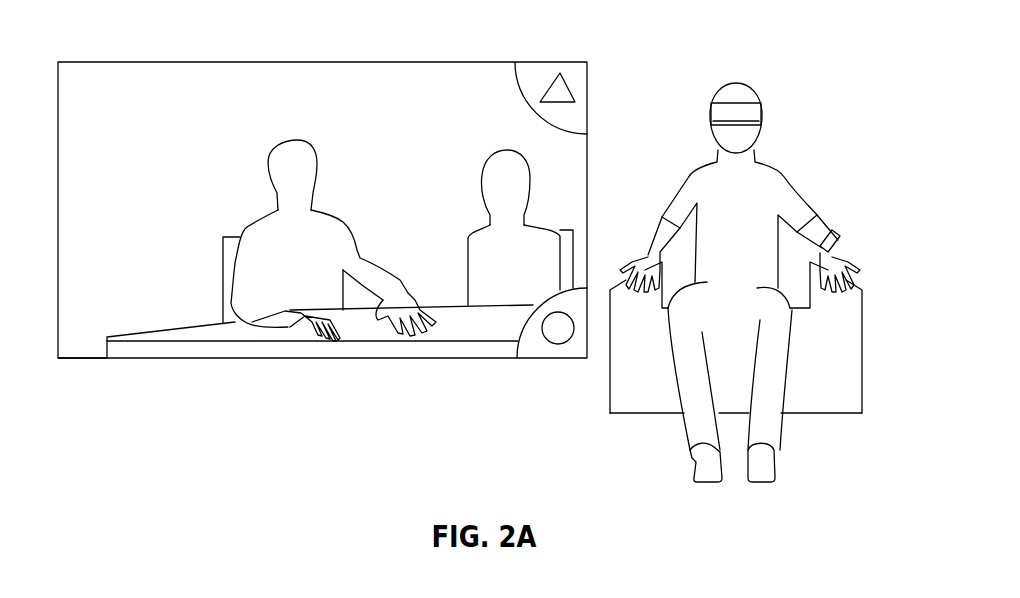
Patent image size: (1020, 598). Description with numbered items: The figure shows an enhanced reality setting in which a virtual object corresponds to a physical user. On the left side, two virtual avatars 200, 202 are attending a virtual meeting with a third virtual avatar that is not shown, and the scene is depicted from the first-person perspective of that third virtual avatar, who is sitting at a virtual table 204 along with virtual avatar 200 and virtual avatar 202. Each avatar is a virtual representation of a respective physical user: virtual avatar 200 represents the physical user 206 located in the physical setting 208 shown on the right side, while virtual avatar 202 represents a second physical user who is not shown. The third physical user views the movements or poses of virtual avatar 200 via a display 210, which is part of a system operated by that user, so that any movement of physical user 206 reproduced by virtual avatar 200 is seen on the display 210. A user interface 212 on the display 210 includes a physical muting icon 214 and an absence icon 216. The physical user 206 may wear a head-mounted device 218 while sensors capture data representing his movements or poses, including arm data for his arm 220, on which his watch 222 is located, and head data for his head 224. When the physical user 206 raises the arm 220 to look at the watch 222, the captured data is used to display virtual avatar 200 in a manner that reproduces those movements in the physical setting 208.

The virtual avatar 200 is at (295, 140).
The virtual avatar 202 is at (512, 150).
The virtual table 204 is at (452, 338).
The physical user 206 is at (763, 268).
The physical setting 208 is at (720, 43).
The display 210 is at (57, 302).
The user interface 212 is at (85, 340).
The physical muting icon 214 is at (553, 82).
The absence icon 216 is at (560, 345).
The head-mounted device 218 is at (748, 116).
The arm 220 is at (808, 195).
The watch 222 is at (834, 247).
The head 224 is at (747, 87).